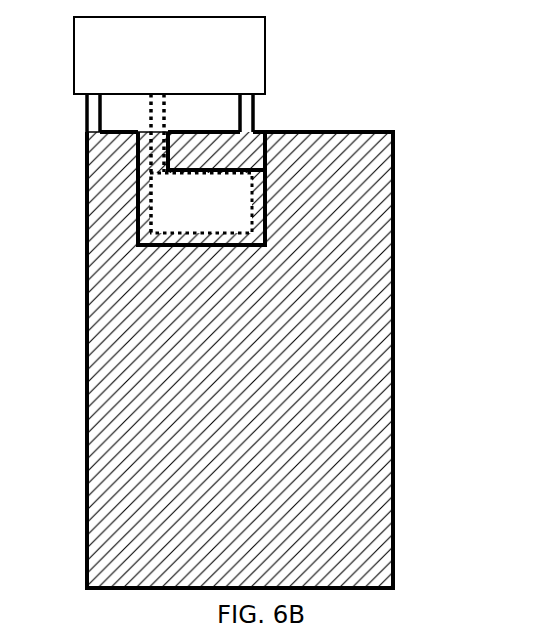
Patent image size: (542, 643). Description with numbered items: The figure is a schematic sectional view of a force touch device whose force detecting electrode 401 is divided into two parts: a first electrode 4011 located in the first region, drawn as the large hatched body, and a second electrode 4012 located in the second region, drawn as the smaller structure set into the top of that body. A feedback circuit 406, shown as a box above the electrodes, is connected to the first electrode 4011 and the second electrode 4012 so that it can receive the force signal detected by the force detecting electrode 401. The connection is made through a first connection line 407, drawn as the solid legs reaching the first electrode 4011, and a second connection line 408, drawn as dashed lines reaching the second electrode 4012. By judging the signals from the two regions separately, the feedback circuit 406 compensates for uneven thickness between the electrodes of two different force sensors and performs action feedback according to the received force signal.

The force detecting electrode 401 is at (264, 360).
The first electrode 4011 is at (166, 150).
The second electrode 4012 is at (225, 218).
The feedback circuit 406 is at (242, 57).
The first connection line 407 is at (87, 105).
The second connection line 408 is at (164, 118).